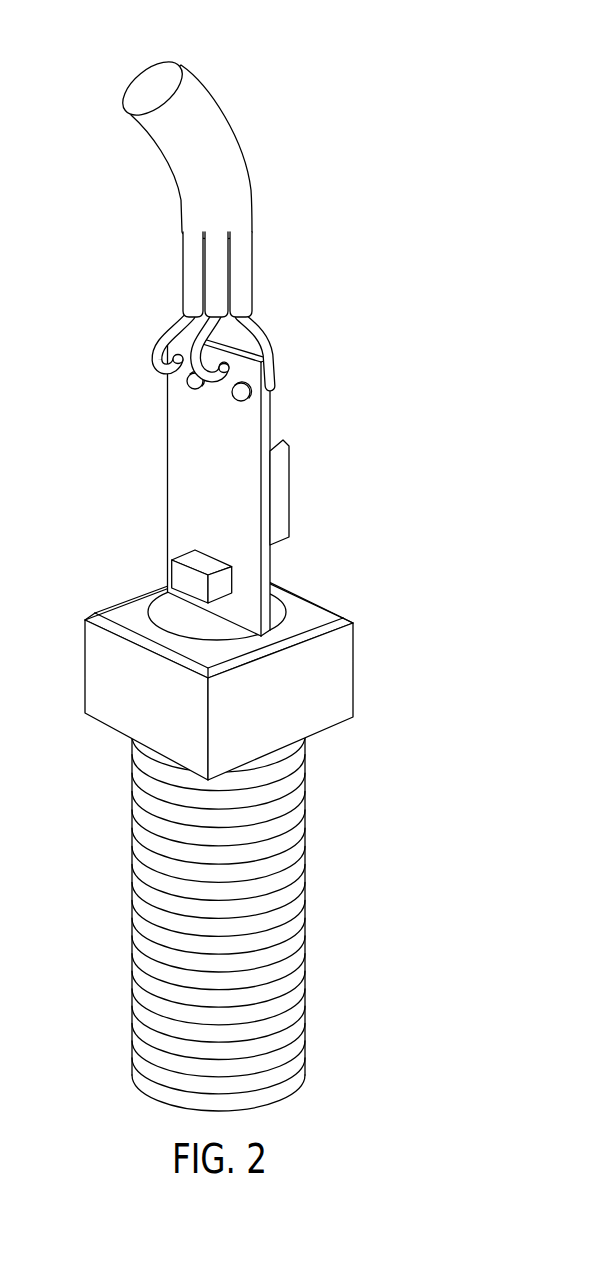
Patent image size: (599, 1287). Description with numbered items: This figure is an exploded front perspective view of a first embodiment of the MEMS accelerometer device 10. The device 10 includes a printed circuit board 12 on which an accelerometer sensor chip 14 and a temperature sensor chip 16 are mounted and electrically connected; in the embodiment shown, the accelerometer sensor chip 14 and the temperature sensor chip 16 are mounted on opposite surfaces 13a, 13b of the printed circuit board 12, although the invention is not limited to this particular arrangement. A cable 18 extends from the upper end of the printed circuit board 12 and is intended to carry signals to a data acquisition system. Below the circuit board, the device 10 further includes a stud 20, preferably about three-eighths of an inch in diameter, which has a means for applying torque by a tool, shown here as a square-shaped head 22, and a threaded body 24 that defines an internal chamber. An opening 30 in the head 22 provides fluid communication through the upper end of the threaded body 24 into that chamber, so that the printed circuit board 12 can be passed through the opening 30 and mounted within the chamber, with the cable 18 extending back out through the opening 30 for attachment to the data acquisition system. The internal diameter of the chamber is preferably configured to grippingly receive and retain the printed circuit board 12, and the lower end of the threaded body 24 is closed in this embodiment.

The MEMS accelerometer device 10 is at (364, 180).
The printed circuit board 12 is at (226, 485).
The first surface of the PCB 13a is at (180, 490).
The second surface of the PCB 13b is at (272, 568).
The accelerometer sensor chip 14 is at (280, 490).
The temperature sensor chip 16 is at (183, 577).
The cable 18 is at (227, 152).
The stud 20 is at (238, 900).
The square-shaped head 22 is at (337, 672).
The threaded body 24 is at (290, 851).
The opening 30 is at (165, 610).